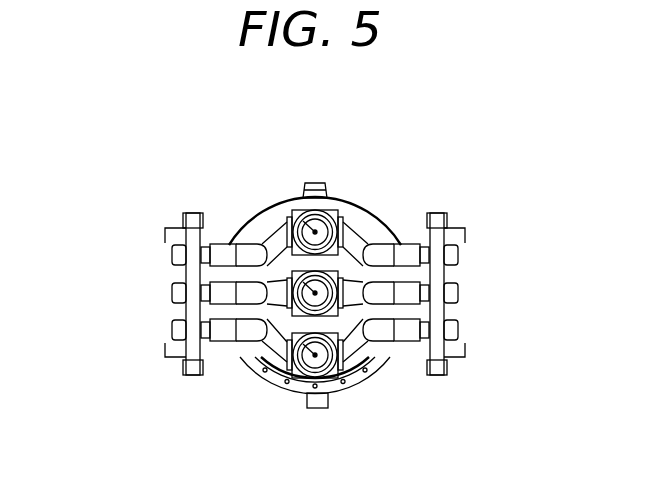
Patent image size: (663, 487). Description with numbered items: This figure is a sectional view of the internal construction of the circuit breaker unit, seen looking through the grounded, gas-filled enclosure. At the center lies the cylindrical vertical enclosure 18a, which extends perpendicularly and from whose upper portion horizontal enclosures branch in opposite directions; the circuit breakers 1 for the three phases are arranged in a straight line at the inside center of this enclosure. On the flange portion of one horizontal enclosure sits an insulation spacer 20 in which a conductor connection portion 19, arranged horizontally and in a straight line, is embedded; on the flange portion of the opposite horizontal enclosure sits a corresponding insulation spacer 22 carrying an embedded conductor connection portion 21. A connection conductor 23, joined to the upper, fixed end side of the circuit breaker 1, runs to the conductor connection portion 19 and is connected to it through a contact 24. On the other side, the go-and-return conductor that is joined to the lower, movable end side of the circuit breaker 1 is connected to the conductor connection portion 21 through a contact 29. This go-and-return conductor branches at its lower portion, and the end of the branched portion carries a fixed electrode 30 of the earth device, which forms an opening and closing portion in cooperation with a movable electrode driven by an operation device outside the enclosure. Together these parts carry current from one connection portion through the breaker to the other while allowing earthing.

The circuit breaker 1 is at (315, 262).
The vertical enclosure 18a is at (347, 200).
The conductor connection portion 19 is at (458, 332).
The insulation spacer 20 is at (440, 228).
The conductor connection portion 21 is at (172, 333).
The insulation spacer 22 is at (190, 376).
The connection conductor 23 is at (396, 241).
The contact 24 is at (402, 405).
The contact 29 is at (234, 225).
The fixed electrode 30 is at (213, 386).